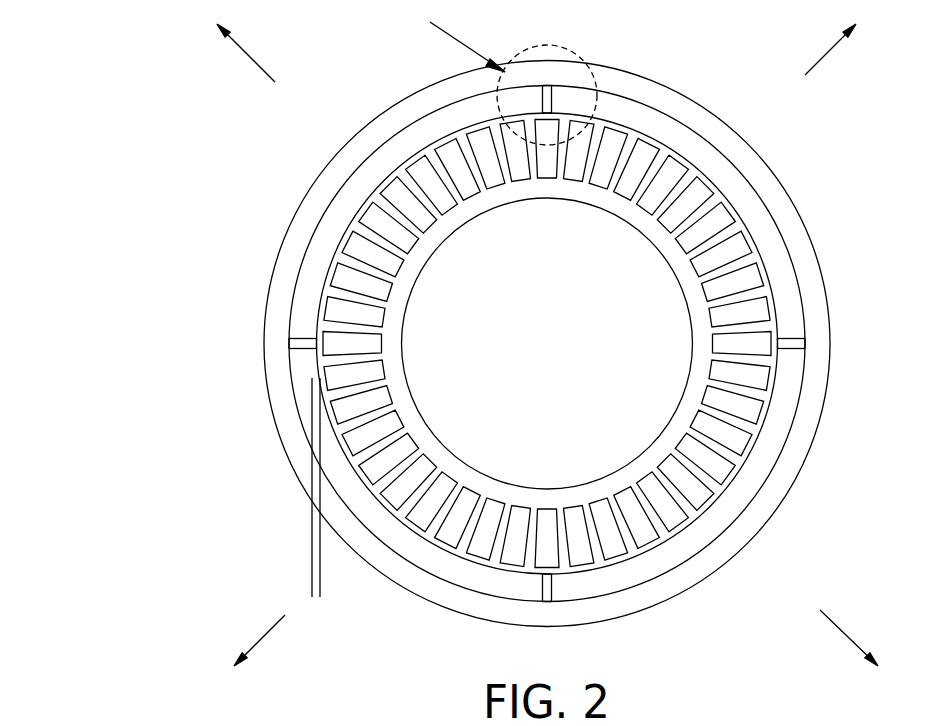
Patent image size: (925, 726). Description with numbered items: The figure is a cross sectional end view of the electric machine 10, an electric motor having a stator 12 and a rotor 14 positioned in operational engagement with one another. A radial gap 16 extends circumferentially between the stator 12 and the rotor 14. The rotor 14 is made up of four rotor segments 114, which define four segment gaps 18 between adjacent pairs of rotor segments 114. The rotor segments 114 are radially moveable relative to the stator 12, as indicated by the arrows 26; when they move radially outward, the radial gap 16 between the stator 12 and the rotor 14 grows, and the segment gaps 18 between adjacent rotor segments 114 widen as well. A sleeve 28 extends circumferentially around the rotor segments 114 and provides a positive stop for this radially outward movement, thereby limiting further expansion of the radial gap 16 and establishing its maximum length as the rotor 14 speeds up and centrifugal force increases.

The electric machine 10 is at (187, 225).
The stator 12 is at (725, 260).
The rotor 14 is at (708, 160).
The radial gap 16 is at (362, 583).
The segment gap 18 is at (548, 95).
The arrows 26 is at (255, 58).
The sleeve 28 is at (762, 178).
The rotor segments 114 is at (330, 221).